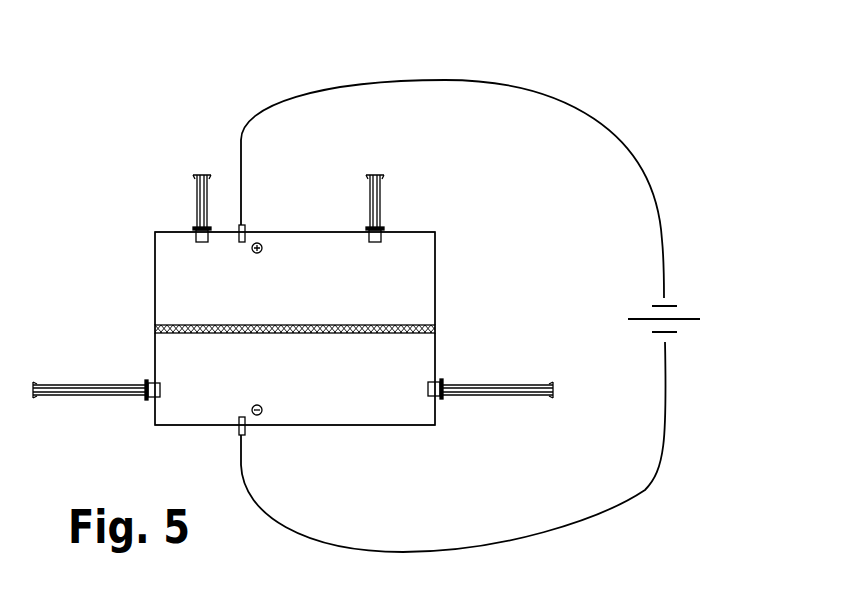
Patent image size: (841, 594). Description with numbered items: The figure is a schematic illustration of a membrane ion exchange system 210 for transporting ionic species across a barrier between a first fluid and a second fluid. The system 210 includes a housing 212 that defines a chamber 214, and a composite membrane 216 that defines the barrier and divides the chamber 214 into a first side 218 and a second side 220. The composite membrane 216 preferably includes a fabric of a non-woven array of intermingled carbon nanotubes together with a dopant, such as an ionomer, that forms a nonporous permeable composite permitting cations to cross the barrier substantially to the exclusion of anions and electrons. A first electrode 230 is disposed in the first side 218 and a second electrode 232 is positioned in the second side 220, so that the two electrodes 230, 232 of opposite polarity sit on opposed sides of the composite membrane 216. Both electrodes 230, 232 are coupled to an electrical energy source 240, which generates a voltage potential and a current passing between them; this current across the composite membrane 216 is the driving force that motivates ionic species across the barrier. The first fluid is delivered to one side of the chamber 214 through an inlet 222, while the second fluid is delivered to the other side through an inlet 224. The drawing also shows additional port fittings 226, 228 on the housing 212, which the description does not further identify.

The system 210 is at (141, 141).
The housing 212 is at (150, 259).
The chamber 214 is at (184, 307).
The composite membrane 216 is at (341, 334).
The first side 218 is at (400, 278).
The second side 220 is at (202, 406).
The inlet 222 is at (146, 398).
The inlet 224 is at (194, 228).
The inlet port 226 is at (384, 228).
The outlet port 228 is at (490, 389).
The first electrode 230 is at (239, 240).
The second electrode 232 is at (240, 418).
The electrical energy source 240 is at (694, 305).